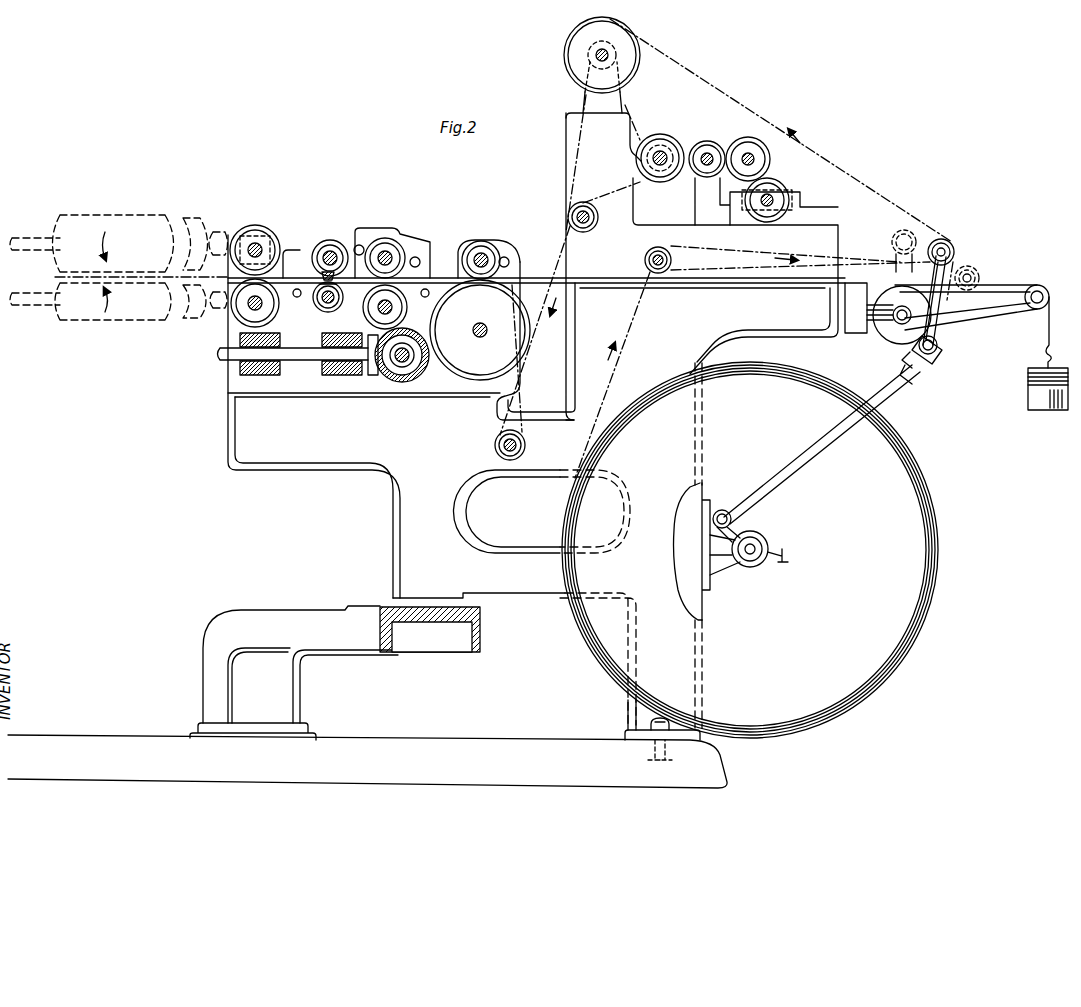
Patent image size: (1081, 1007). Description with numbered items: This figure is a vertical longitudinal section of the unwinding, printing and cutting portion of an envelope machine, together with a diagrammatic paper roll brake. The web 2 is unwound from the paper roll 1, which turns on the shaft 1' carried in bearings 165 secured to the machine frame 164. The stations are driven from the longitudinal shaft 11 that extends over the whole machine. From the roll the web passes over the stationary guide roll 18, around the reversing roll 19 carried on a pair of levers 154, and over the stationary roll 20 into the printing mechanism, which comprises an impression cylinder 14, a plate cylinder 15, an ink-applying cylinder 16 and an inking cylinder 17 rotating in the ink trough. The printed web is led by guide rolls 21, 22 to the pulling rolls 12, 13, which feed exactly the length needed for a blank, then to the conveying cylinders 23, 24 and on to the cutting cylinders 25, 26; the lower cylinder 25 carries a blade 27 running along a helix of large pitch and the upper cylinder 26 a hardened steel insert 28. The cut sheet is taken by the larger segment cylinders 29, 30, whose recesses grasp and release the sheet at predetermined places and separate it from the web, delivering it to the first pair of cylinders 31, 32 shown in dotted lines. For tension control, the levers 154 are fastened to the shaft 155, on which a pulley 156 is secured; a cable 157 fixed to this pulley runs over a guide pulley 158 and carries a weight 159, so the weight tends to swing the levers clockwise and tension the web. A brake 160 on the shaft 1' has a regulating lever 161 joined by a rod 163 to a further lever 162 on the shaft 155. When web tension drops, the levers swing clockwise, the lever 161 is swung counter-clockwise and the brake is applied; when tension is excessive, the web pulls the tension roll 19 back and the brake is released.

The paper roll 1 is at (753, 550).
The shaft of the paper roll 1' is at (742, 574).
The web 2 is at (500, 403).
The longitudinal shaft 11 is at (324, 355).
The pulling roll 12 is at (480, 334).
The pulling roll 13 is at (472, 249).
The impression cylinder 14 is at (636, 157).
The plate cylinder 15 is at (706, 141).
The ink-applying cylinder 16 is at (770, 155).
The inking cylinder 17 is at (782, 188).
The guide roll 18 is at (671, 262).
The reversing roll 19 is at (948, 242).
The guide roll 20 is at (575, 40).
The guide roll 21 is at (566, 210).
The guide roll 22 is at (494, 450).
The conveying cylinder 23 is at (402, 312).
The conveying cylinder 24 is at (396, 246).
The lower cutting cylinder 25 is at (336, 308).
The upper cutting cylinder 26 is at (328, 244).
The blade 27 is at (318, 290).
The hardened steel insert 28 is at (320, 270).
The lower separating cylinder 29 is at (272, 316).
The upper separating cylinder 30 is at (255, 225).
The first feed cylinder 31 is at (116, 320).
The first feed cylinder 32 is at (125, 212).
The pair of levers 154 is at (971, 266).
The shaft 155 is at (890, 326).
The pulley 156 is at (906, 350).
The cable 157 is at (1048, 322).
The guide pulley 158 is at (1042, 286).
The weight 159 is at (1028, 396).
The brake 160 is at (770, 547).
The regulating lever 161 is at (734, 523).
The lever 162 is at (935, 327).
The rod 163 is at (878, 388).
The machine frame 164 is at (700, 612).
The bearings 165 is at (708, 588).